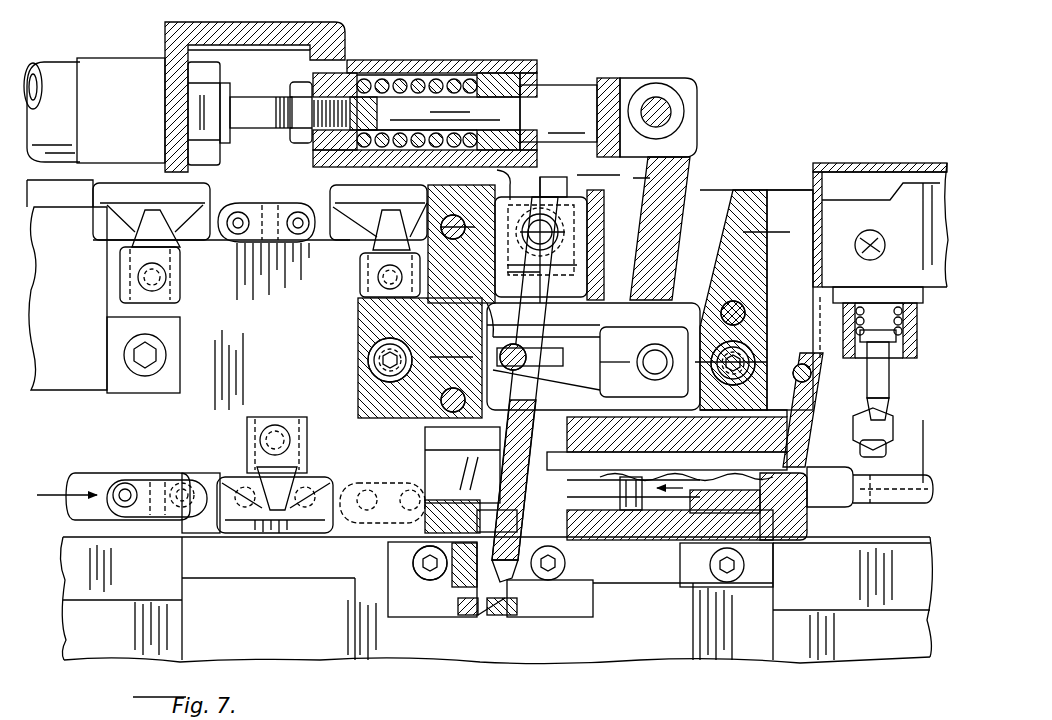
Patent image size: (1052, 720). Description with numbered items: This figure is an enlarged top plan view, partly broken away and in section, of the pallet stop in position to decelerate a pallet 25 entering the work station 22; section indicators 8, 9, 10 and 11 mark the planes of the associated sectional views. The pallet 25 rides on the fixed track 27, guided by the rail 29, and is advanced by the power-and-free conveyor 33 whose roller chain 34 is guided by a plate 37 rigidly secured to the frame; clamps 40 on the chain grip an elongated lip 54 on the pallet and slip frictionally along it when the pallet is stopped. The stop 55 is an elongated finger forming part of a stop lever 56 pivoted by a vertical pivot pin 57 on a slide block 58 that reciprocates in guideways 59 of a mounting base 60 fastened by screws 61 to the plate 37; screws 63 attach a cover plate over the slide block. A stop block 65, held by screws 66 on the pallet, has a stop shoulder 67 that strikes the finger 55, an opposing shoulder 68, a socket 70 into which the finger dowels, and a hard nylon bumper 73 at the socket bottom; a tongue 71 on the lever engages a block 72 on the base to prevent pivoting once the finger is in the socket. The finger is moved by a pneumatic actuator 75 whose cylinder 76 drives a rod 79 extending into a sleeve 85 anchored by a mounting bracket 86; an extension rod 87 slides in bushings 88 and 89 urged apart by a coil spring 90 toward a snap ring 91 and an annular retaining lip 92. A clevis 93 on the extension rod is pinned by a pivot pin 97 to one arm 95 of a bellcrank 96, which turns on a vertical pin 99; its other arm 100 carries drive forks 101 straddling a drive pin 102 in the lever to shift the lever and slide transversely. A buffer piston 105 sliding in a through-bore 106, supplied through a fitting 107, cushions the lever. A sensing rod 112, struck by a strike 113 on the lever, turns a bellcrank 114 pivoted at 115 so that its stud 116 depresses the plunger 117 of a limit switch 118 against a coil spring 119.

The section line 8- 8 is at (343, 436).
The section line 9- 9 is at (327, 328).
The section line 10- 10 is at (390, 195).
The section line 11- 11 is at (693, 47).
The work station 22 is at (580, 660).
The pallet 25 is at (180, 632).
The fixed track 27 is at (838, 667).
The rail 29 is at (853, 611).
The power-and-free conveyor 33 is at (153, 515).
The roller chain 34 is at (133, 483).
The guide plate 37 is at (230, 315).
The clamp 40 is at (280, 542).
The lip 54 is at (203, 478).
The stop finger 55 is at (507, 568).
The stop lever 56 is at (520, 521).
The pivot pin 57 is at (541, 200).
The slide block 58 is at (587, 250).
The guideways 59 is at (505, 185).
The mounting base 60 is at (356, 298).
The screws 61 is at (366, 346).
The screws 63 is at (445, 238).
The stop block 65 is at (413, 614).
The screws 66 is at (414, 565).
The stop shoulder 67 is at (470, 582).
The stop shoulder 68 is at (636, 545).
The socket 70 is at (478, 616).
The tongue 71 is at (428, 458).
The block 72 is at (432, 523).
The bumper 73 is at (510, 614).
The pneumatic actuator 75 is at (113, 52).
The cylinder 76 is at (60, 66).
The cylinder rod 79 is at (264, 100).
The sleeve 85 is at (458, 96).
The mounting bracket 86 is at (318, 24).
The extension rod 87 is at (481, 63).
The bushing 88 is at (530, 73).
The bushing 89 is at (342, 74).
The coil spring 90 is at (428, 73).
The snap ring 91 is at (540, 87).
The annular retaining lip 92 is at (310, 148).
The clevis 93 is at (688, 80).
The bellcrank arm 95 is at (689, 173).
The bellcrank 96 is at (700, 205).
The pivot pin 97 is at (672, 102).
The vertical pin 99 is at (660, 343).
The bellcrank arm 100 is at (610, 338).
The drive forks 101 is at (490, 304).
The drive pin 102 is at (492, 353).
The buffer piston 105 is at (536, 482).
The through-bore 106 is at (673, 505).
The fitting 107 is at (765, 528).
The sensing rod 112 is at (690, 448).
The strike 113 is at (533, 440).
The bellcrank 114 is at (793, 457).
The pivot 115 is at (690, 421).
The stud 116 is at (887, 422).
The plunger 117 is at (893, 371).
The limit switch 118 is at (915, 187).
The coil spring 119 is at (908, 300).